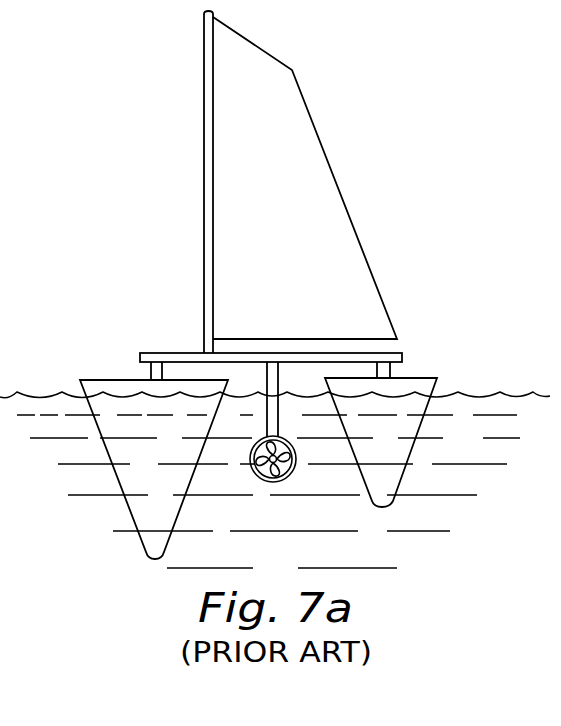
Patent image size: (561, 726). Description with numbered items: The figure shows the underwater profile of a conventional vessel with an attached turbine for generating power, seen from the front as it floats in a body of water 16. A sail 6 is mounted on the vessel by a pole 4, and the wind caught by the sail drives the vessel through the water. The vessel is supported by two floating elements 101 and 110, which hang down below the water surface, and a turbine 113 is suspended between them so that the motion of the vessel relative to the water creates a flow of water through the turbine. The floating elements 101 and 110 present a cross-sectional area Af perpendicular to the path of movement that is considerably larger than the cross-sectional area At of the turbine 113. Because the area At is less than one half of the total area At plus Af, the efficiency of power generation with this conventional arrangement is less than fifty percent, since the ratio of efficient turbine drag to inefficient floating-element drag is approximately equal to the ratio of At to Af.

The pole 4 is at (206, 67).
The sail 6 is at (279, 85).
The body of water 16 is at (513, 398).
The floating element 101 is at (89, 383).
The floating element 110 is at (421, 380).
The turbine 113 is at (275, 479).
The cross-sectional area of the floating elements Af is at (261, 451).
The cross-sectional area of the turbine At is at (291, 467).